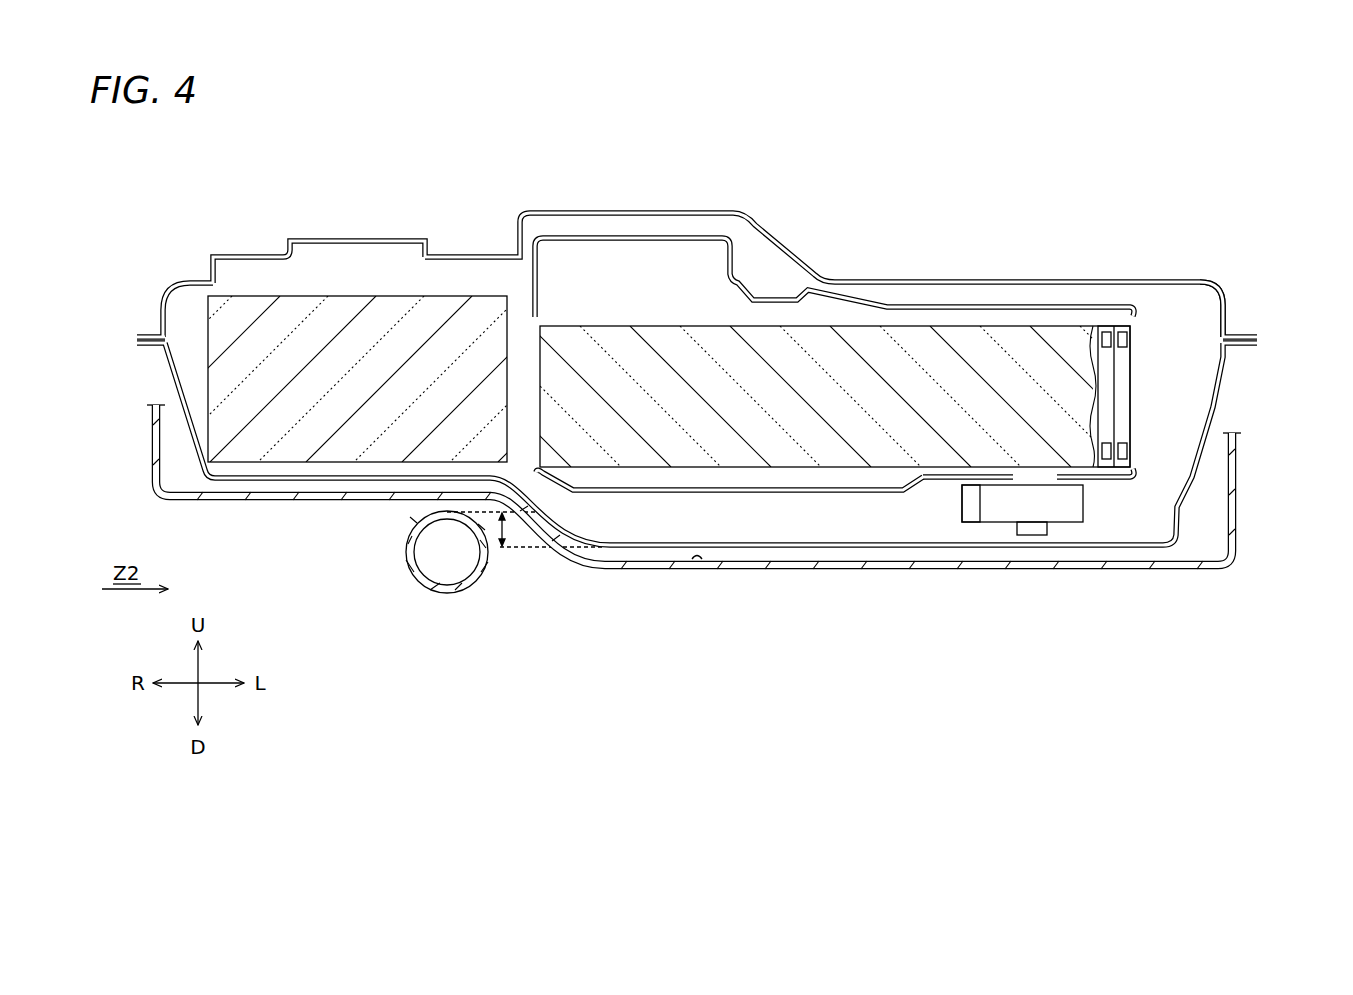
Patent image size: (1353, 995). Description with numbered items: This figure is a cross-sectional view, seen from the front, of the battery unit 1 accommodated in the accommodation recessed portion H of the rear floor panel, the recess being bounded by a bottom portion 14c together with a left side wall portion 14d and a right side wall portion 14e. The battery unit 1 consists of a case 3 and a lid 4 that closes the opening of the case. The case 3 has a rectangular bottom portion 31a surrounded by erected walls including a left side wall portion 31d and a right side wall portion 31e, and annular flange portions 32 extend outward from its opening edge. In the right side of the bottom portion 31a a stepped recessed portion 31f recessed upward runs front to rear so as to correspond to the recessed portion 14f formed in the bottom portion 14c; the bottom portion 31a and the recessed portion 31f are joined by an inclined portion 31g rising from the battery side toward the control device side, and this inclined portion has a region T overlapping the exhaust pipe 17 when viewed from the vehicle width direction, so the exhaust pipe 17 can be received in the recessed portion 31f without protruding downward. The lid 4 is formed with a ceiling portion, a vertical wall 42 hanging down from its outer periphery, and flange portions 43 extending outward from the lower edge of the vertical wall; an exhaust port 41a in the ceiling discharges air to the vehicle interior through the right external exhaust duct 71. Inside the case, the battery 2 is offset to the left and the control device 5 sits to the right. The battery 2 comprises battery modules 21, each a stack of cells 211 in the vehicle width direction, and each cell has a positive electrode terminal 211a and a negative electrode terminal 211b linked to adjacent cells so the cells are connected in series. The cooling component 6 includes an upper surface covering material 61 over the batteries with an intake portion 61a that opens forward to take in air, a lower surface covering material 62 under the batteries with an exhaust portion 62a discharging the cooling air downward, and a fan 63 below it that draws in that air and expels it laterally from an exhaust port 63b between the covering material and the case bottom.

The battery unit 1 is at (852, 178).
The battery 2 is at (996, 324).
The battery module 21 is at (1035, 357).
The cell 211 is at (1108, 389).
The positive electrode terminal 211a is at (1106, 330).
The negative electrode terminal 211b is at (1108, 462).
The case 3 is at (1212, 457).
The bottom portion 31a is at (843, 549).
The left side wall portion 31d is at (1216, 407).
The right side wall portion 31e is at (180, 418).
The stepped recessed portion 31f is at (316, 482).
The inclined portion 31g is at (565, 527).
The flange portion 32 is at (152, 345).
The lid 4 is at (906, 281).
The exhaust port 41a is at (232, 282).
The vertical wall 42 is at (163, 302).
The flange portion 43 is at (148, 335).
The control device 5 is at (462, 296).
The cooling component 6 is at (1077, 528).
The upper surface covering material 61 is at (780, 300).
The intake portion 61a is at (640, 265).
The lower surface covering material 62 is at (767, 493).
The exhaust portion 62a is at (1010, 479).
The fan 63 is at (1060, 524).
The exhaust port 63b is at (962, 500).
The right external exhaust duct 71 is at (357, 241).
The bottom portion 14c is at (650, 569).
The left side wall portion 14d is at (1238, 508).
The right side wall portion 14e is at (150, 455).
The recessed portion 14f is at (250, 500).
The exhaust pipe 17 is at (447, 593).
The region T is at (525, 529).
The accommodation recessed portion H is at (698, 557).